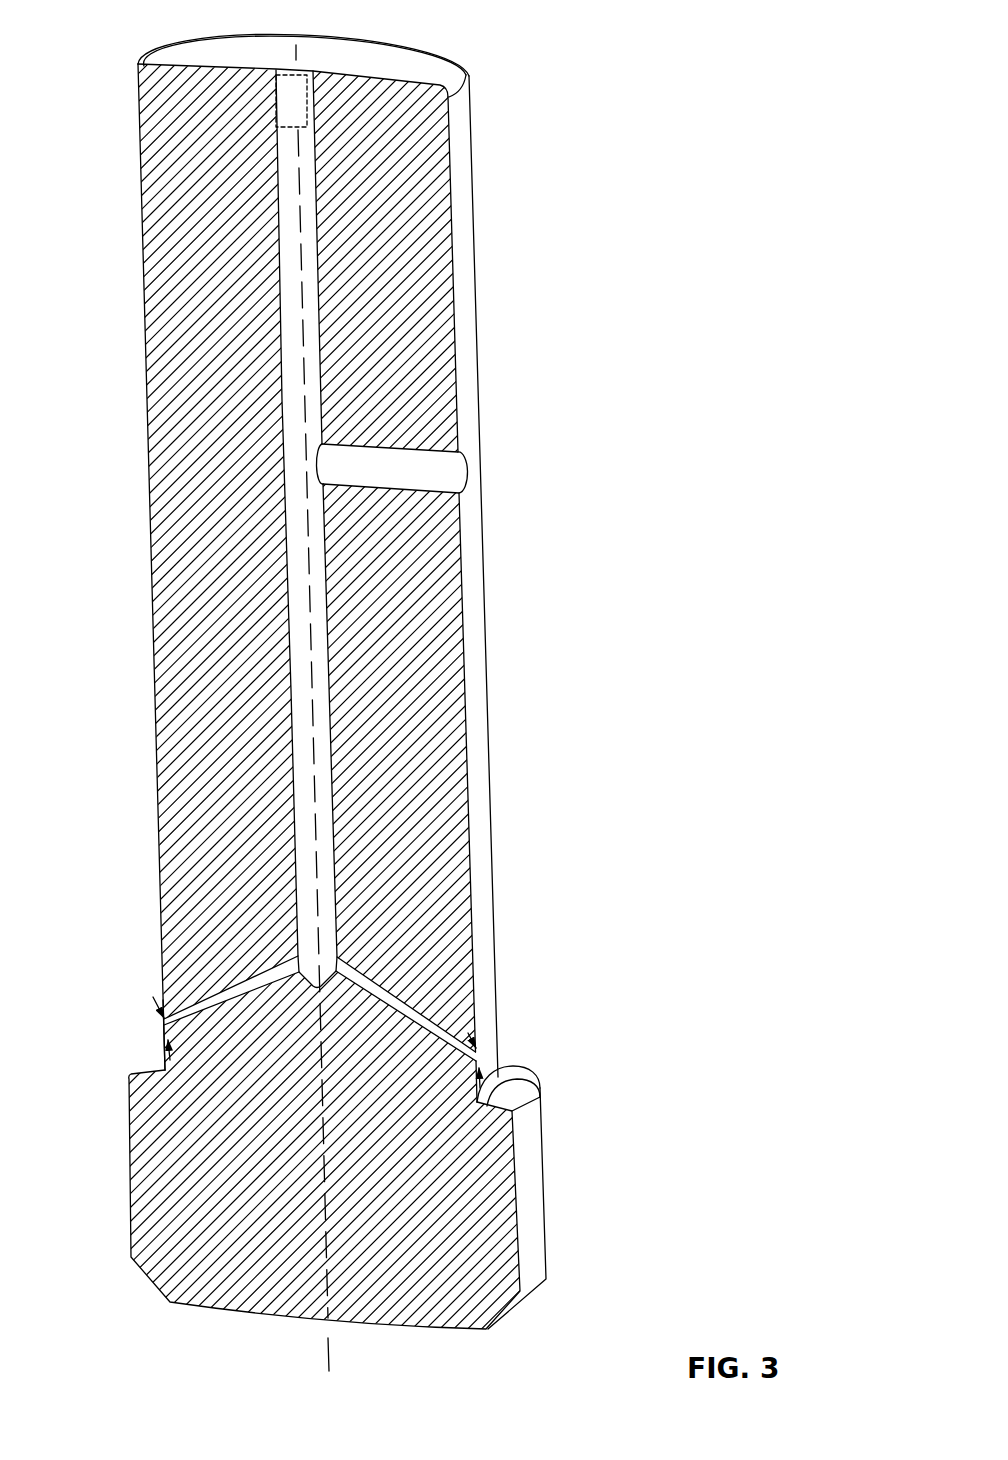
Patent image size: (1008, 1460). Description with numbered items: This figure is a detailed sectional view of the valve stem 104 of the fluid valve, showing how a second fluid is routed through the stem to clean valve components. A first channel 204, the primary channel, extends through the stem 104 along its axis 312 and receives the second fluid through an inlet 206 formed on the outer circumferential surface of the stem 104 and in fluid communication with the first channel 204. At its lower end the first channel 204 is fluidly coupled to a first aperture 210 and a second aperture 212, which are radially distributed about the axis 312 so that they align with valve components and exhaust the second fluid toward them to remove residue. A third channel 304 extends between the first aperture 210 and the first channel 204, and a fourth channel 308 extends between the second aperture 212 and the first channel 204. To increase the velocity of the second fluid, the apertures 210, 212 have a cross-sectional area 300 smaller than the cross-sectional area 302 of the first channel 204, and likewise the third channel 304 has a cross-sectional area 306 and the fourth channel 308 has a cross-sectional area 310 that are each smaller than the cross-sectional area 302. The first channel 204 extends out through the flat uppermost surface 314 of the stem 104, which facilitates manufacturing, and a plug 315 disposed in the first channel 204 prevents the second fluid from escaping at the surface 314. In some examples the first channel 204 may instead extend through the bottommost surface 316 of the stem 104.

The valve stem 104 is at (469, 77).
The first channel 204 is at (307, 570).
The inlet 206 is at (453, 478).
The first aperture 210 is at (157, 1035).
The second aperture 212 is at (480, 1057).
The cross-sectional area 300 is at (169, 1028).
The cross-sectional area 302 is at (240, 668).
The third channel 304 is at (223, 991).
The cross-sectional area 306 is at (267, 1010).
The fourth channel 308 is at (415, 1004).
The cross-sectional area 310 is at (362, 1022).
The axis 312 is at (329, 1340).
The uppermost surface 314 is at (247, 55).
The plug 315 is at (302, 128).
The bottommost surface 316 is at (237, 1310).